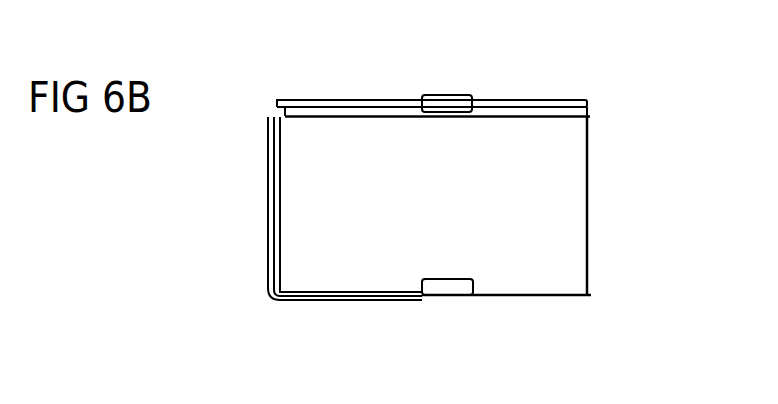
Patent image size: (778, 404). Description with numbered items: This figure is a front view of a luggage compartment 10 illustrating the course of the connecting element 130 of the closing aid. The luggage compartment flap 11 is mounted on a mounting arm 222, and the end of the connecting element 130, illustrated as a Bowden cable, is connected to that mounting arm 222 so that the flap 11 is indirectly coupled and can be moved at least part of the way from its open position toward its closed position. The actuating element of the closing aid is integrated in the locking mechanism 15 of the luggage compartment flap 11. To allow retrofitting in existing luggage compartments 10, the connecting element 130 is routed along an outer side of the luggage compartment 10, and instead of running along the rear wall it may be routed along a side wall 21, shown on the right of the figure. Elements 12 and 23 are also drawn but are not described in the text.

The luggage compartment 10 is at (435, 92).
The luggage compartment flap 11 is at (547, 98).
The housing 12 is at (560, 235).
The locking mechanism 15 is at (462, 97).
The side wall 21 is at (267, 217).
The housing bottom wall 23 is at (532, 297).
The connecting element 130 is at (327, 300).
The mounting arm 222 is at (280, 107).